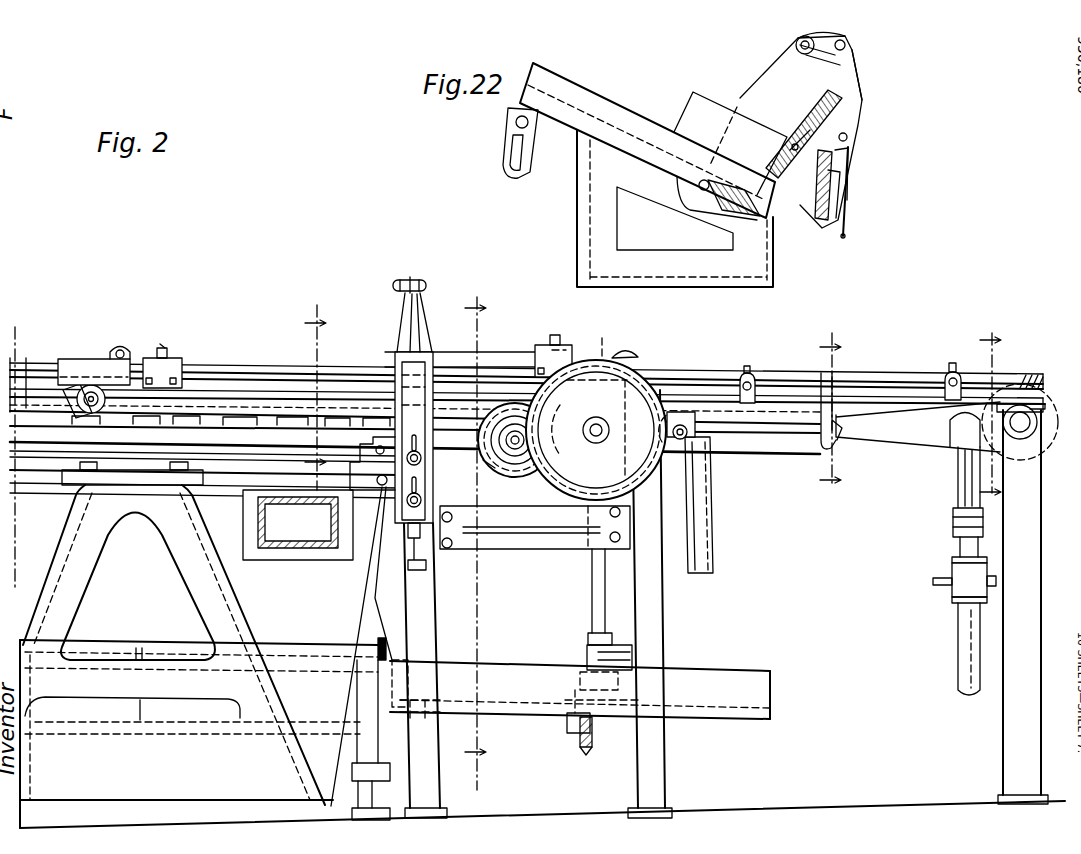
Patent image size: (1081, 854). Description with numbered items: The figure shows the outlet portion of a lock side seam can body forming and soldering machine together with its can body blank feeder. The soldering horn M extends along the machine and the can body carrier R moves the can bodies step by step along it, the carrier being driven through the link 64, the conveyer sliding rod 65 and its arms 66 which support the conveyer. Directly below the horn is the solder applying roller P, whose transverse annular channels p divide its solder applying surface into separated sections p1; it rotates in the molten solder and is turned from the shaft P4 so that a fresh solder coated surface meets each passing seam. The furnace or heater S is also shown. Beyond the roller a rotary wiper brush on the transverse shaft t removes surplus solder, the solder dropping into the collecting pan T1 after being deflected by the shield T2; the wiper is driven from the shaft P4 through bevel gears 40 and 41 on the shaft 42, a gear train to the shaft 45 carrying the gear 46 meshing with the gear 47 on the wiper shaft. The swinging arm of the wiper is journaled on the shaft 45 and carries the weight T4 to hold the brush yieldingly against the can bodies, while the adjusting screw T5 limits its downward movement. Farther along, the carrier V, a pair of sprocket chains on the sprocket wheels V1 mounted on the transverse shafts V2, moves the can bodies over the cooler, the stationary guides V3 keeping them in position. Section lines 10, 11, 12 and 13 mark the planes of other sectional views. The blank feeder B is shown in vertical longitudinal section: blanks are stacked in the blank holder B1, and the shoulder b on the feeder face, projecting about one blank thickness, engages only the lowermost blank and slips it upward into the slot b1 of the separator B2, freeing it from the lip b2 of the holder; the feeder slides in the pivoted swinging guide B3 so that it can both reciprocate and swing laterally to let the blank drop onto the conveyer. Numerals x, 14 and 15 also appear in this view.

In FIG. 2, the can body carrier R is at (500, 380).
In FIG. 2, the soldering horn M is at (238, 392).
In FIG. 2, the solder applying roller P is at (415, 433).
In FIG. 2, the transverse annular channels p is at (65, 421).
In FIG. 2, the separated sections p1 is at (112, 421).
In FIG. 2, the link 64 is at (23, 372).
In FIG. 2, the conveyer sliding rod 65 is at (44, 365).
In FIG. 2, the arms 66 is at (170, 355).
In FIG. 2, the frame A is at (173, 560).
In FIG. 2, the furnace or heater S is at (298, 544).
In FIG. 2, the shield T2 is at (390, 603).
In FIG. 2, the shaft 45 is at (598, 425).
In FIG. 2, the gear 47 is at (480, 433).
In FIG. 2, the transverse shaft t is at (482, 477).
In FIG. 2, the collecting pan T1 is at (522, 470).
In FIG. 2, the gear 46 is at (611, 340).
In FIG. 2, the adjusting screw T5 is at (625, 352).
In FIG. 2, the shaft 42 is at (590, 582).
In FIG. 2, the bevel gear 41 is at (583, 663).
In FIG. 2, the bevel gear 40 is at (586, 740).
In FIG. 2, the weight T4 is at (700, 565).
In FIG. 2, the sprocket wheels V1 is at (680, 443).
In FIG. 2, the transverse shafts V2 is at (686, 436).
In FIG. 2, the carrier V is at (870, 413).
In FIG. 2, the stationary guides V3 is at (843, 383).
In FIG. 2, the shaft P4 is at (78, 740).
In FIG. 2, the section line 10— 10 is at (318, 393).
In FIG. 2, the section line 11— 11 is at (479, 535).
In FIG. 2, the section line 12— 12 is at (832, 413).
In FIG. 2, the section line 13— 13 is at (994, 419).
In FIG. 22, the section line 13— 13 is at (847, 222).
In FIG. 22, the blank feed device B is at (697, 107).
In FIG. 22, the blank holder B1 is at (738, 178).
In FIG. 22, the feeder safeguard device or separator B2 is at (805, 108).
In FIG. 22, the pivoted or swinging guide B3 is at (832, 180).
In FIG. 22, the shoulder b is at (772, 218).
In FIG. 22, the slot b1 is at (847, 148).
In FIG. 22, the lip b2 is at (767, 217).
In FIG. 22, the wedge x is at (782, 140).
In FIG. 22, the link 14 is at (842, 38).
In FIG. 22, the spring 15 is at (863, 100).